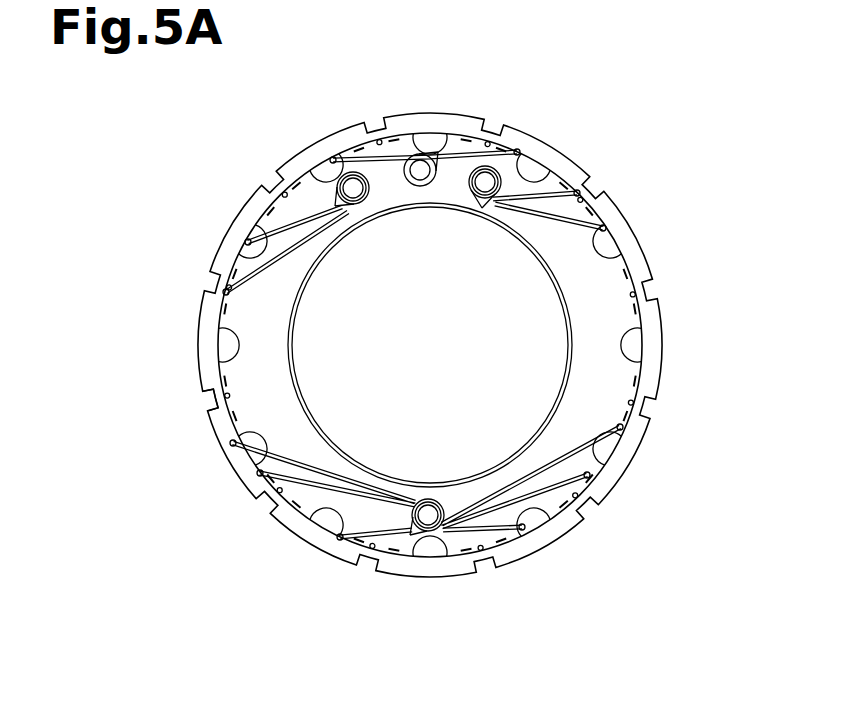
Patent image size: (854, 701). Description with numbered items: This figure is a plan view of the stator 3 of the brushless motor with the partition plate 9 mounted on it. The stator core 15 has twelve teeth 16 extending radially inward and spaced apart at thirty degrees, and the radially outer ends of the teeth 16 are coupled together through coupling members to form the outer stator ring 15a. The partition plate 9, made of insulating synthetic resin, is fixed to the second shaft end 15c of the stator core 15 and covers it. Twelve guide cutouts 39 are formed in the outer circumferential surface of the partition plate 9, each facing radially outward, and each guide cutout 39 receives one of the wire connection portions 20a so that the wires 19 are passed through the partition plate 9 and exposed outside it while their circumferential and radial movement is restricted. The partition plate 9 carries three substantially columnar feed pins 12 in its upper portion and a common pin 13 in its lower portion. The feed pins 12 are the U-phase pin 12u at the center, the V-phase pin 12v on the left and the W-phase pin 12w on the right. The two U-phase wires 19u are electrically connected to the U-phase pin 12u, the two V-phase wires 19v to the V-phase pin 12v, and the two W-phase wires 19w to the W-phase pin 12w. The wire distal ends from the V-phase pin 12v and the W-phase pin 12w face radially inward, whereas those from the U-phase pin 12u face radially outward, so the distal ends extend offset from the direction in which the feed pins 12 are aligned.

The stator 3 is at (577, 163).
The partition plate 9 is at (622, 300).
The feed pin 12 is at (433, 150).
The U-phase pin 12u is at (398, 125).
The V-phase pin 12v is at (337, 167).
The W-phase pin 12w is at (533, 147).
The common pin 13 is at (428, 532).
The stator core 15 is at (615, 200).
The outer stator ring 15a is at (642, 258).
The second shaft end 15c is at (197, 374).
The teeth 16 is at (545, 412).
The wires 19 is at (237, 290).
The U-phase wires 19u is at (380, 125).
The V-phase wires 19v is at (283, 552).
The W-phase wires 19w is at (588, 218).
The wire connection portions 20a is at (346, 173).
The guide cutouts 39 is at (603, 240).